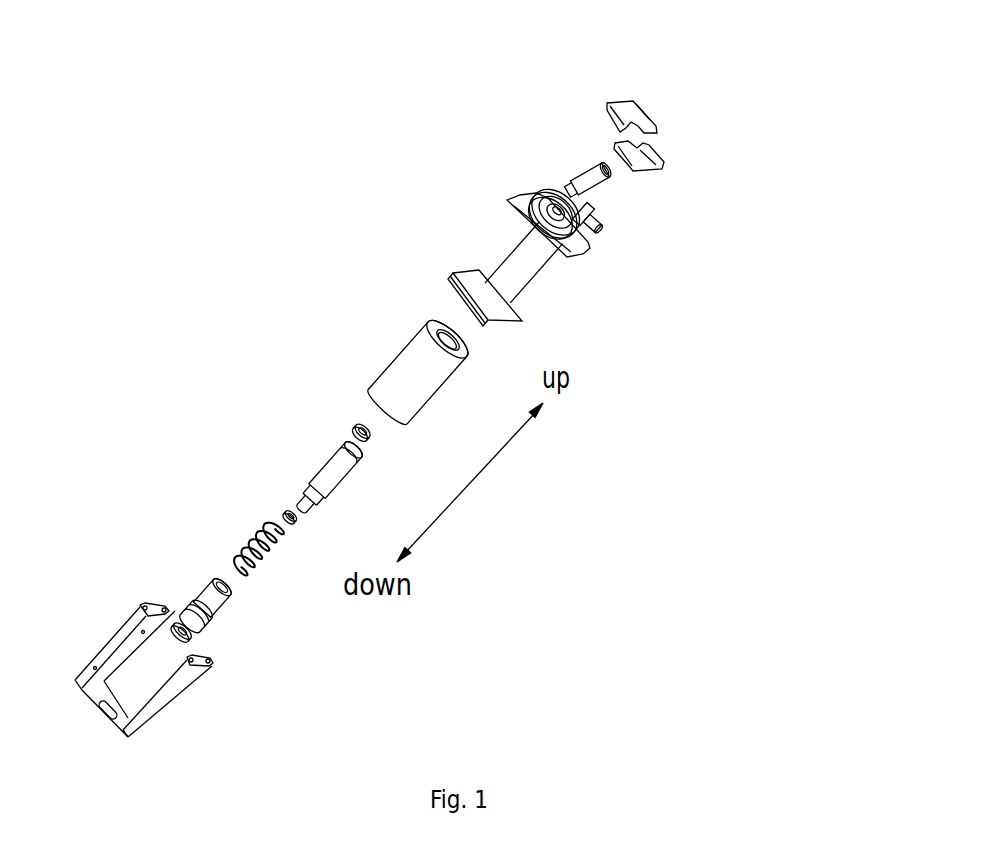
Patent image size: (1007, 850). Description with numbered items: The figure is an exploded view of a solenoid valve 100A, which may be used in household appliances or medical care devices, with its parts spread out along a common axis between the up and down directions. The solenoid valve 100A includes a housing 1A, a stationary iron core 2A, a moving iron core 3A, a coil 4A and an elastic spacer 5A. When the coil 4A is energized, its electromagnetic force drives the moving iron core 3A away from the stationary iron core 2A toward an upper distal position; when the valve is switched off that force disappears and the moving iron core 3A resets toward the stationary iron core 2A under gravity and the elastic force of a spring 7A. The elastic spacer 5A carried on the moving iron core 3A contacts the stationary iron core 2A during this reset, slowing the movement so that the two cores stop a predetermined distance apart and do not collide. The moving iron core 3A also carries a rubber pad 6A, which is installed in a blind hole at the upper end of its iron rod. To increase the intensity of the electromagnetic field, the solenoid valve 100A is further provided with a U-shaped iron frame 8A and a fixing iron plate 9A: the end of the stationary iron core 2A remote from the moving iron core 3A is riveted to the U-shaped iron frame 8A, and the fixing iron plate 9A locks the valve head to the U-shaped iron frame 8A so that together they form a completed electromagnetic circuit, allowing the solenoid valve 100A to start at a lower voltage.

The solenoid valve 100A is at (692, 187).
The housing 1A is at (517, 207).
The stationary iron core 2A is at (210, 590).
The moving iron core 3A is at (322, 458).
The coil 4A is at (405, 368).
The elastic spacer 5A is at (278, 513).
The rubber pad 6A is at (352, 426).
The spring 7A is at (238, 552).
The U-shaped iron frame 8A is at (122, 633).
The fixing iron plate 9A is at (608, 104).